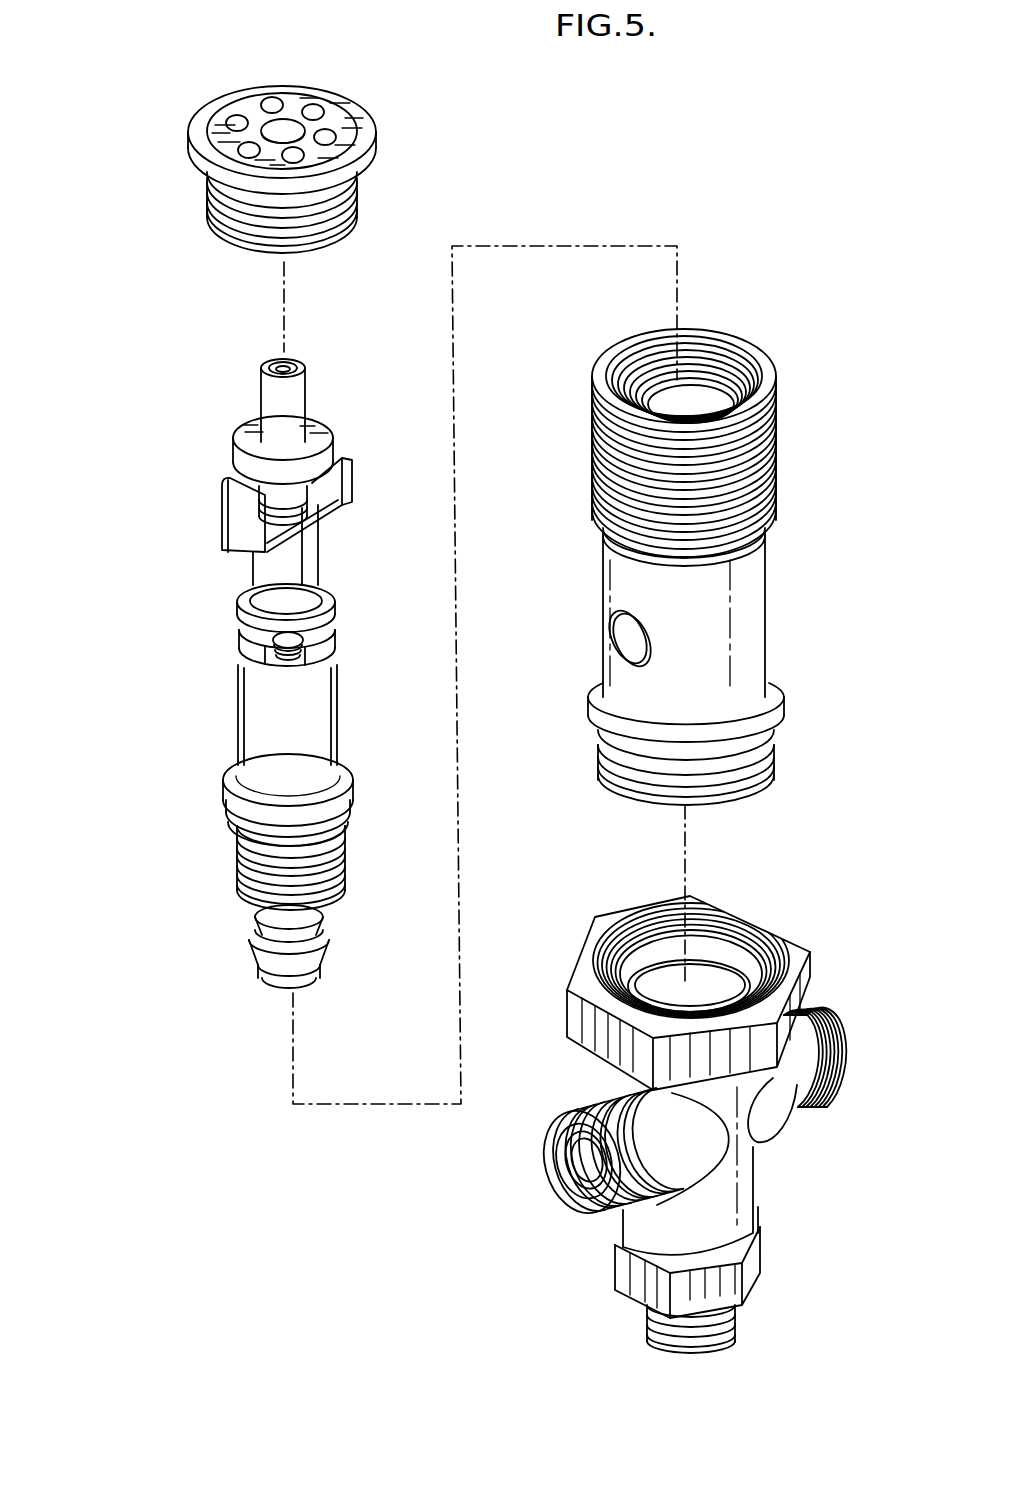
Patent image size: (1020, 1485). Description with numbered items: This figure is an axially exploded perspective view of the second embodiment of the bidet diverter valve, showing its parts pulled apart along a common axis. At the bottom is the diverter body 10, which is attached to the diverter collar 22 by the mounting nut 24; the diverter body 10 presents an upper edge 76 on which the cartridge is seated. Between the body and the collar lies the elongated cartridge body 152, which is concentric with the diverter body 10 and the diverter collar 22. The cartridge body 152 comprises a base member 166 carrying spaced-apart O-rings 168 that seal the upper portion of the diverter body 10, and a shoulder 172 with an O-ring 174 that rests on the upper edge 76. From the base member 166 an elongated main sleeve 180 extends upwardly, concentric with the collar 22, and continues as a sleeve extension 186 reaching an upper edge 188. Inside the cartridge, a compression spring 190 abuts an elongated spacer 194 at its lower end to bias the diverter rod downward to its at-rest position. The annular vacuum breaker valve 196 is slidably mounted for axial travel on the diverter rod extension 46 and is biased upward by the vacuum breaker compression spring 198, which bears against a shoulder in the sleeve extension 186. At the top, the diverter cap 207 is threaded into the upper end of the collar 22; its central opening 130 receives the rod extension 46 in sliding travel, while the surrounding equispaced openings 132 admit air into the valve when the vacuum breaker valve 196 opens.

The diverter body 10 is at (657, 1096).
The diverter collar 22 is at (600, 578).
The mounting nut 24 is at (563, 1006).
The diverter rod extension 46 is at (304, 388).
The upper edge 76 is at (745, 918).
The central opening 130 is at (284, 130).
The equispaced openings 132 is at (293, 156).
The cartridge body 152 is at (267, 652).
The base member 166 is at (338, 830).
The O-rings 168 is at (237, 878).
The shoulder 172 is at (350, 763).
The O-ring 174 is at (228, 802).
The main sleeve 180 is at (240, 695).
The sleeve extension 186 is at (307, 573).
The upper edge 188 is at (318, 538).
The compression spring 190 is at (305, 655).
The elongated spacer 194 is at (322, 920).
The vacuum breaker valve 196 is at (240, 428).
The vacuum breaker compression spring 198 is at (335, 495).
The diverter cap 207 is at (192, 158).